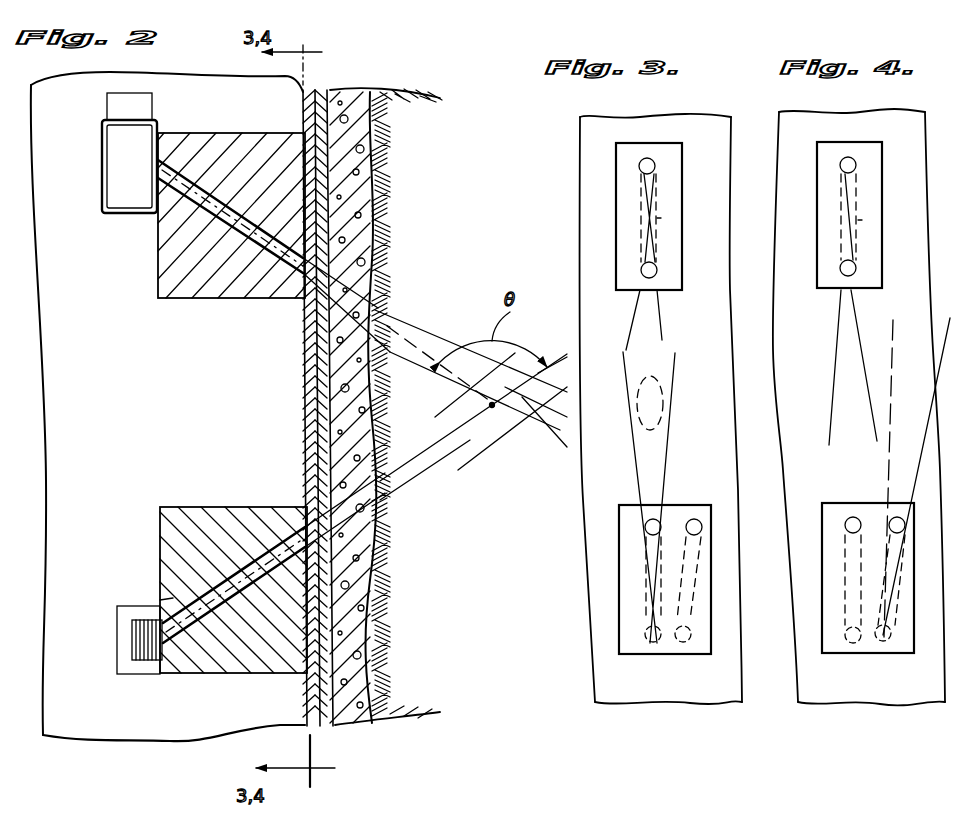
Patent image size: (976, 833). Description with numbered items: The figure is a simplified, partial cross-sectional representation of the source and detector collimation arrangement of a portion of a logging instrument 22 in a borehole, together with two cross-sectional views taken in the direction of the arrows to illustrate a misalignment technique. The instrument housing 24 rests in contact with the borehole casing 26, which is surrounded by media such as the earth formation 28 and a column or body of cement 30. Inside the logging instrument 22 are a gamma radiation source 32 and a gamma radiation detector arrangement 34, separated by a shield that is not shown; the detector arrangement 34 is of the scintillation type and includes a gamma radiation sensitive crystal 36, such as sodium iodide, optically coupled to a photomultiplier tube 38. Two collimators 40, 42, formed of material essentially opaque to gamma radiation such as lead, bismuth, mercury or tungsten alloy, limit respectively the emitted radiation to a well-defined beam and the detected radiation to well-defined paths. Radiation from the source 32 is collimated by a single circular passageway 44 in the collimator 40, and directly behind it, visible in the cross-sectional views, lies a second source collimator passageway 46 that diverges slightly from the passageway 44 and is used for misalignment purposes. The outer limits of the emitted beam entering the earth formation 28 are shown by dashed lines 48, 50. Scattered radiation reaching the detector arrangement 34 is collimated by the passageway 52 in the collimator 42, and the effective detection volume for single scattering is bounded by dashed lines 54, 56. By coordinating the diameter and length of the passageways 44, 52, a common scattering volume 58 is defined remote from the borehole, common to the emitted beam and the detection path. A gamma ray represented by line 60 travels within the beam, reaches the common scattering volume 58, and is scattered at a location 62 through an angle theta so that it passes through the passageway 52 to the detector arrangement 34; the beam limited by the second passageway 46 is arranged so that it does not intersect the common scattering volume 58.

In FIG. 2, the logging instrument 22 is at (138, 402).
In FIG. 2, the instrument housing 24 is at (303, 431).
In FIG. 2, the borehole casing 26 is at (332, 90).
In FIG. 2, the earth formation 28 is at (446, 190).
In FIG. 2, the body of cement 30 is at (375, 604).
In FIG. 2, the gamma radiation source 32 is at (140, 640).
In FIG. 3, the gamma radiation source 32 is at (657, 634).
In FIG. 4, the gamma radiation source 32 is at (883, 637).
In FIG. 2, the gamma radiation detector arrangement 34 is at (127, 220).
In FIG. 2, the gamma radiation sensitive crystal 36 is at (120, 157).
In FIG. 2, the photomultiplier tube 38 is at (145, 106).
In FIG. 2, the collimator 40 is at (185, 507).
In FIG. 3, the collimator 40 is at (628, 587).
In FIG. 4, the collimator 40 is at (822, 607).
In FIG. 2, the collimator 42 is at (185, 298).
In FIG. 3, the collimator 42 is at (616, 208).
In FIG. 4, the collimator 42 is at (817, 178).
In FIG. 2, the passageway 44 is at (235, 600).
In FIG. 3, the passageway 44 is at (657, 627).
In FIG. 4, the passageway 44 is at (848, 633).
In FIG. 3, the second source collimator passageway 46 is at (683, 630).
In FIG. 4, the second source collimator passageway 46 is at (900, 613).
In FIG. 2, the dashed line 48 is at (445, 450).
In FIG. 2, the dashed line 50 is at (417, 433).
In FIG. 2, the collimation passageway 52 is at (245, 250).
In FIG. 3, the collimation passageway 52 is at (659, 222).
In FIG. 4, the collimation passageway 52 is at (860, 222).
In FIG. 2, the dashed line 54 is at (412, 328).
In FIG. 2, the dashed line 56 is at (425, 373).
In FIG. 2, the common scattering volume 58 is at (494, 415).
In FIG. 3, the common scattering volume 58 is at (670, 405).
In FIG. 2, the line 60 is at (174, 597).
In FIG. 2, the location 62 is at (490, 408).